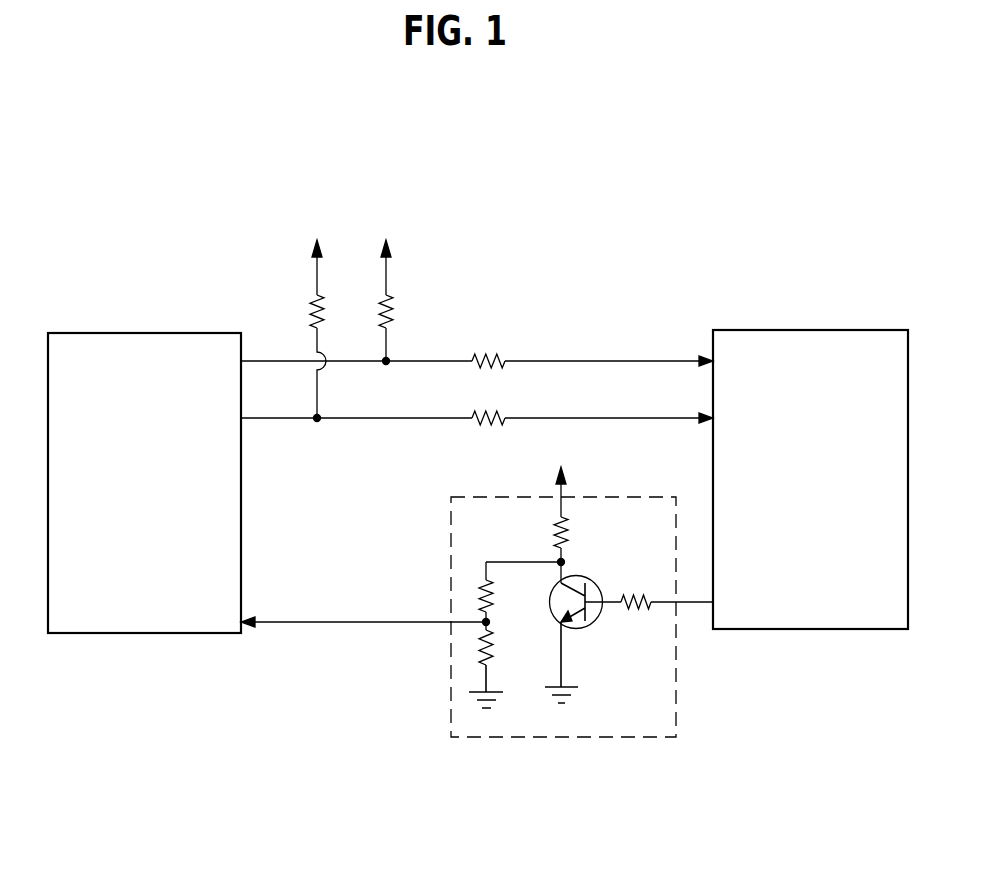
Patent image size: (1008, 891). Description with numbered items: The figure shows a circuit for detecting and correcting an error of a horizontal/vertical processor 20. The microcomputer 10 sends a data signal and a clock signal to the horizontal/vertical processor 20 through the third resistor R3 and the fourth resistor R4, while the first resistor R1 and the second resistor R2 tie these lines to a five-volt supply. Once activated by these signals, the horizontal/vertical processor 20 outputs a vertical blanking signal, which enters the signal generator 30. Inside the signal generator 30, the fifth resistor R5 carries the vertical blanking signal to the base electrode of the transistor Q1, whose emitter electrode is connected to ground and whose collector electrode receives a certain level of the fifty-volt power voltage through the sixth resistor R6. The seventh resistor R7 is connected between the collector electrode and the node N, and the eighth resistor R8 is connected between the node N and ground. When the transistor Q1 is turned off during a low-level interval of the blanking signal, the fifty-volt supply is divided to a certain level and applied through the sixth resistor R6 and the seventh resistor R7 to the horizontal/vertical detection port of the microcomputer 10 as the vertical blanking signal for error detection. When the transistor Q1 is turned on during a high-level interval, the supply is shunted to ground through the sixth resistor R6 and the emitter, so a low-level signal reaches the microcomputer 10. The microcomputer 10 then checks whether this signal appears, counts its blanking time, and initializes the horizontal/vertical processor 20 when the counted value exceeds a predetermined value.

The microcomputer 10 is at (138, 634).
The horizontal/vertical processor 20 is at (815, 630).
The signal generator 30 is at (477, 632).
The node N is at (486, 622).
The first resistor R1 is at (331, 319).
The second resistor R2 is at (400, 290).
The third resistor R3 is at (477, 344).
The fourth resistor R4 is at (477, 402).
The fifth resistor R5 is at (649, 588).
The sixth resistor R6 is at (573, 511).
The seventh resistor R7 is at (520, 596).
The eighth resistor R8 is at (497, 669).
The transistor Q1 is at (574, 640).